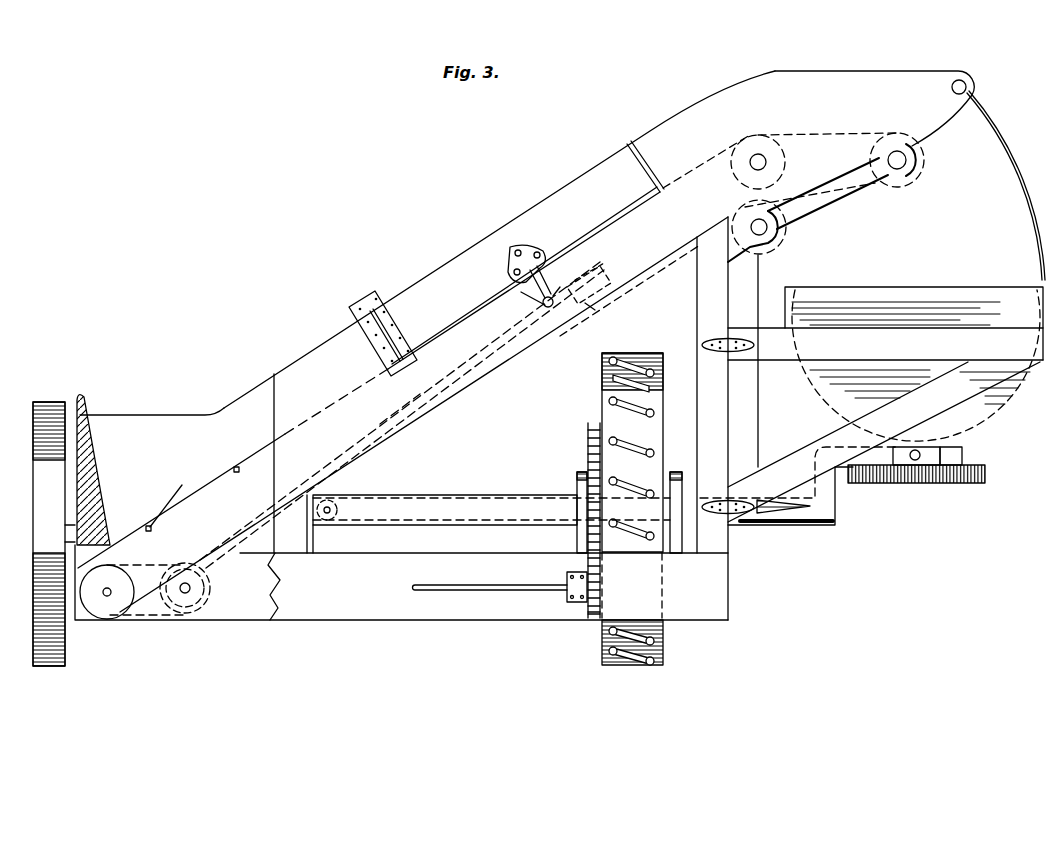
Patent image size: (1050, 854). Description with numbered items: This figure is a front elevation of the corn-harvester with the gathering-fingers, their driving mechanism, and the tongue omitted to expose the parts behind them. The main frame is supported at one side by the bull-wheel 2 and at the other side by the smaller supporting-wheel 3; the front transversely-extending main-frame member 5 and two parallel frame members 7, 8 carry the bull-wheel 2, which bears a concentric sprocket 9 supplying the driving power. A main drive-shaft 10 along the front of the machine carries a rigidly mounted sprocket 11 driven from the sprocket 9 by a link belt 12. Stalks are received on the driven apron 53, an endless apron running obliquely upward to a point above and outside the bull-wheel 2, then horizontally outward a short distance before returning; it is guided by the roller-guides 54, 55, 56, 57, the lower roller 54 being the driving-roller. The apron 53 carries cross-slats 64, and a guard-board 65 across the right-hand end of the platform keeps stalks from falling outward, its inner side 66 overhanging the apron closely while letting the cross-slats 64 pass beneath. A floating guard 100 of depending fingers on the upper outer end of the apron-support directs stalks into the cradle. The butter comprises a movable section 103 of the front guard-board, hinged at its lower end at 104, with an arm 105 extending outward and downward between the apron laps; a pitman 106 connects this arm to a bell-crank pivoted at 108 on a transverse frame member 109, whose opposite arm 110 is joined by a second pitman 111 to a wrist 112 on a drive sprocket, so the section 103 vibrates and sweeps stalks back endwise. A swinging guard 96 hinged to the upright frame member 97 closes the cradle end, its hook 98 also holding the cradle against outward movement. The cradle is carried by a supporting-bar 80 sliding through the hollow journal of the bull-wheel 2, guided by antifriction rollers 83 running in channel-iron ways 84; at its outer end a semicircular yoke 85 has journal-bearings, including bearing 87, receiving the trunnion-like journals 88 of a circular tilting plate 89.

The supporting-wheel 3 is at (49, 534).
The front transversely-extending main-frame member 5 is at (874, 108).
The roller-guide 55 is at (783, 161).
The roller-guide 56 is at (912, 178).
The roller-guide 57 is at (787, 233).
The floating guard 100 is at (1023, 192).
The movable section of guard-board 103 is at (450, 287).
The hinge 104 is at (356, 316).
The arm 105 is at (547, 260).
The pitman 106 is at (548, 308).
The pivot 108 is at (610, 258).
The transverse frame member 109 is at (585, 303).
The arm of bell-crank 110 is at (617, 245).
The upright frame member 97 is at (724, 302).
The swinging guard 96 is at (898, 338).
The hook 98 is at (1040, 350).
The cross-slats 64 is at (326, 408).
The guard-board 65 is at (92, 470).
The inner side of guard-board 66 is at (108, 523).
The driven apron 53 is at (200, 493).
The driving-roller 54 is at (108, 612).
The wrist 112 is at (200, 583).
The second pitman 111 is at (405, 418).
The antifriction devices 83 is at (340, 503).
The ways 84 is at (444, 494).
The parallel frame member 7 is at (576, 478).
The sprocket 9 is at (587, 425).
The bull-wheel 2 is at (610, 468).
The parallel frame member 8 is at (672, 472).
The supporting-bar 80 is at (693, 518).
The link belt 12 is at (600, 563).
The main drive-shaft 10 is at (523, 591).
The sprocket 11 is at (588, 618).
The semicircular yoke 85 is at (877, 458).
The trunnion-like journals 88 is at (913, 462).
The journal-bearing 87 is at (930, 463).
The circular tilting plate 89 is at (973, 465).